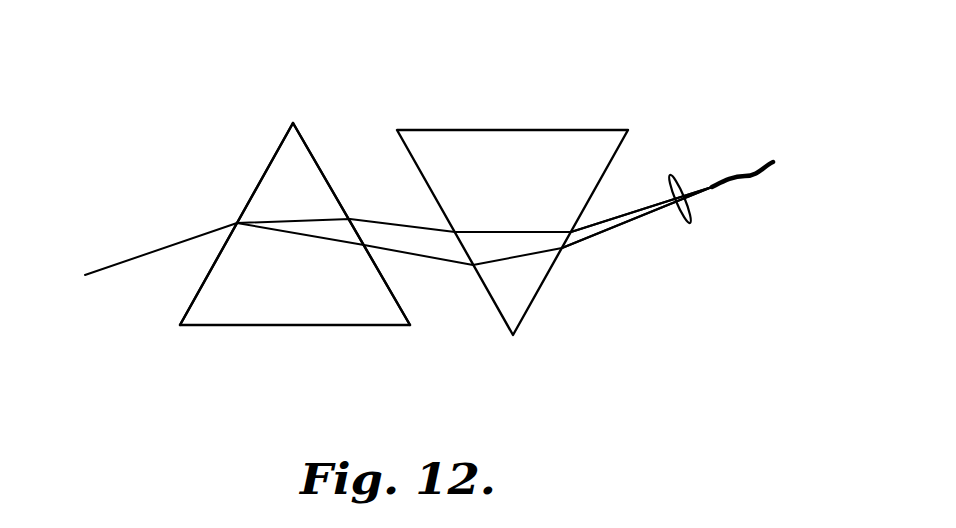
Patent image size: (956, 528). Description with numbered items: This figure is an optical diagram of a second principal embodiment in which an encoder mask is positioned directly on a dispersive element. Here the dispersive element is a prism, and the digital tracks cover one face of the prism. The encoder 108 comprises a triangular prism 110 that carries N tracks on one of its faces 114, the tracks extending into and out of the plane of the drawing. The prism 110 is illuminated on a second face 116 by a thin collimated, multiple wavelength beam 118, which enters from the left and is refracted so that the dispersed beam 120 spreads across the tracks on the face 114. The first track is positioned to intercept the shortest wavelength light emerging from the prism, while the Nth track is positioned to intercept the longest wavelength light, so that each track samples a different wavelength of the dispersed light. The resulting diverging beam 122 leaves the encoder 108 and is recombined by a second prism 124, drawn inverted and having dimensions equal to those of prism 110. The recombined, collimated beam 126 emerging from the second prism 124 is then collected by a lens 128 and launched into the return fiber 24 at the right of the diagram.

The encoder 108 is at (287, 118).
The triangular prism 110 is at (280, 159).
The face 114 is at (322, 171).
The second face 116 is at (256, 194).
The collimated multiple wavelength beam 118 is at (110, 266).
The dispersed beam 120 is at (318, 233).
The diverging beam 122 is at (406, 224).
The second prism 124 is at (583, 142).
The collimated beam 126 is at (607, 218).
The lens 128 is at (672, 177).
The return fiber 24 is at (727, 184).